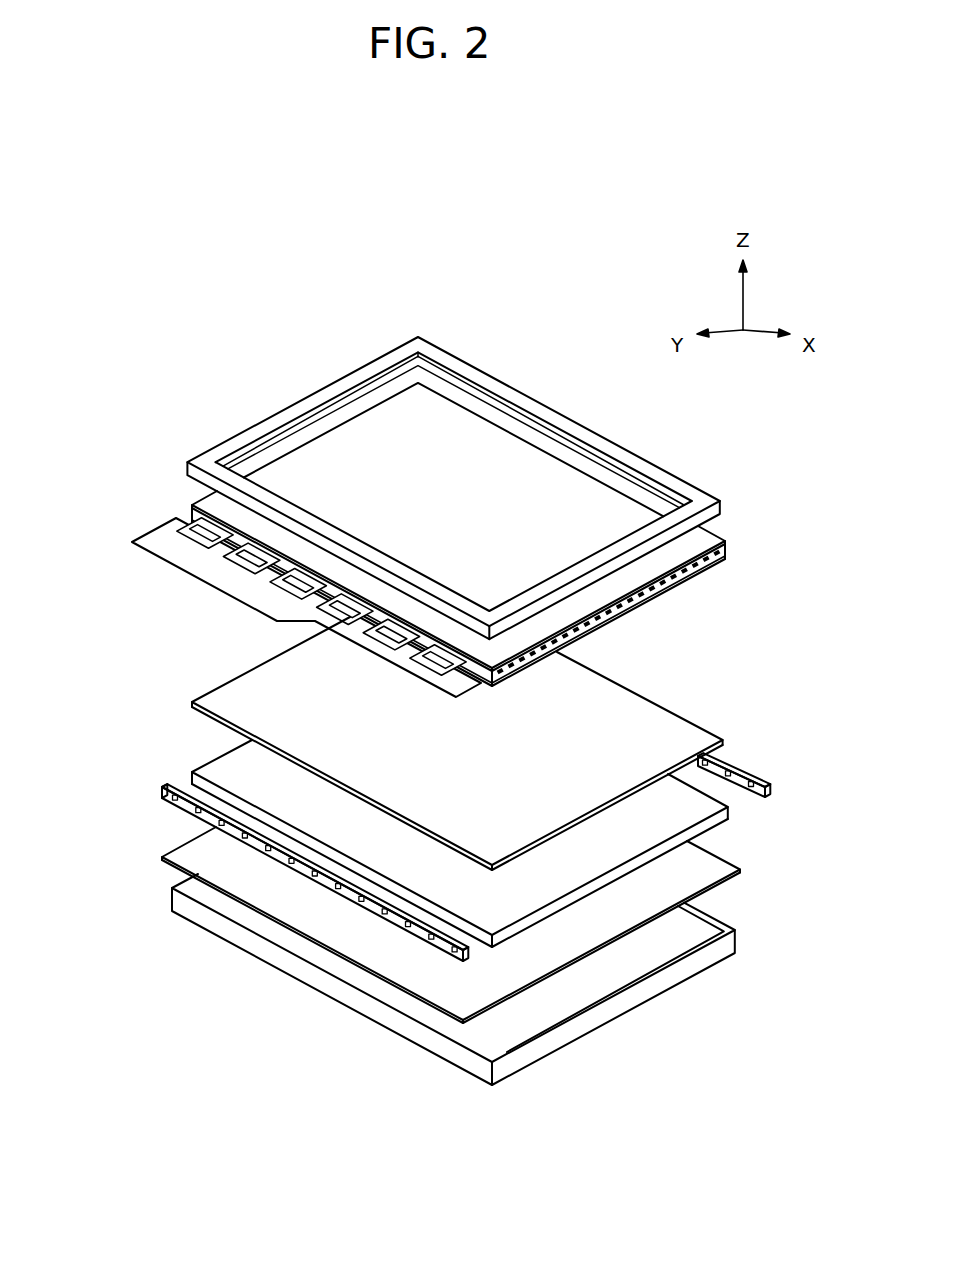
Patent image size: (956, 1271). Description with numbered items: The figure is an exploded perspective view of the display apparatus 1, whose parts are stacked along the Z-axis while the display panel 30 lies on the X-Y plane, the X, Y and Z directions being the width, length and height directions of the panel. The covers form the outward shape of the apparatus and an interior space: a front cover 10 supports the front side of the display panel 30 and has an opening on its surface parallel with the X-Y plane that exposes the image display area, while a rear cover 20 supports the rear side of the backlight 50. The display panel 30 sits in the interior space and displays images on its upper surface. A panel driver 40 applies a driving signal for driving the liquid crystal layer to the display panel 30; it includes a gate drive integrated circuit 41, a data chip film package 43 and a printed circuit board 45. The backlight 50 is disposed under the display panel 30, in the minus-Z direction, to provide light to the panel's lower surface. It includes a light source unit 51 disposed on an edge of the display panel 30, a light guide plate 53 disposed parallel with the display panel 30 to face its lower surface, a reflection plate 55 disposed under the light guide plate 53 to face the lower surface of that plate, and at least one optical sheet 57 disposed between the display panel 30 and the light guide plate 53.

The display apparatus 1 is at (551, 331).
The front cover 10 is at (720, 503).
The rear cover 20 is at (738, 942).
The display panel 30 is at (170, 503).
The panel driver 40 is at (385, 593).
The gate drive integrated circuit 41 is at (457, 694).
The data chip film package 43 is at (205, 553).
The printed circuit board 45 is at (238, 590).
The backlight 50 is at (120, 851).
The light source unit 51 is at (160, 789).
The light guide plate 53 is at (222, 764).
The reflection plate 55 is at (742, 870).
The optical sheet 57 is at (722, 744).